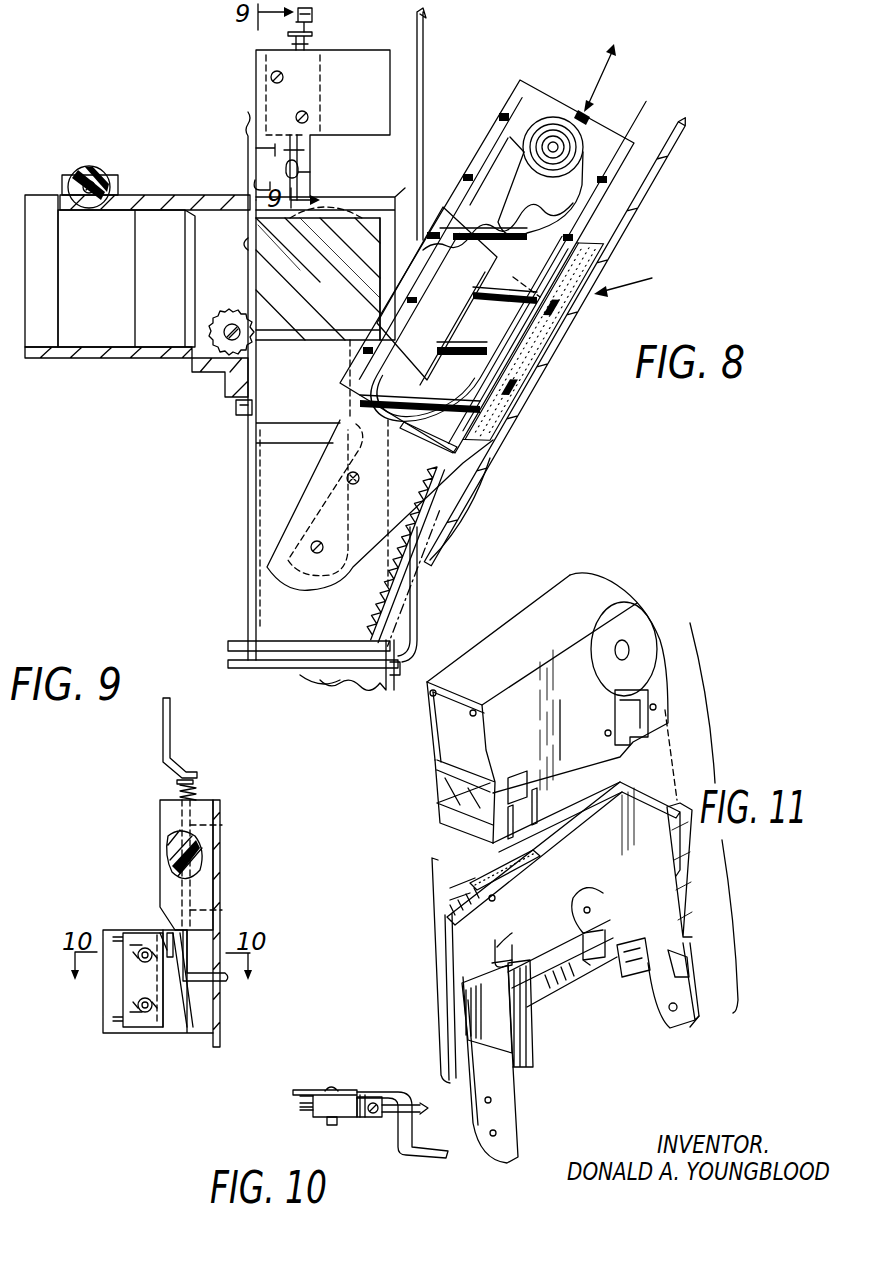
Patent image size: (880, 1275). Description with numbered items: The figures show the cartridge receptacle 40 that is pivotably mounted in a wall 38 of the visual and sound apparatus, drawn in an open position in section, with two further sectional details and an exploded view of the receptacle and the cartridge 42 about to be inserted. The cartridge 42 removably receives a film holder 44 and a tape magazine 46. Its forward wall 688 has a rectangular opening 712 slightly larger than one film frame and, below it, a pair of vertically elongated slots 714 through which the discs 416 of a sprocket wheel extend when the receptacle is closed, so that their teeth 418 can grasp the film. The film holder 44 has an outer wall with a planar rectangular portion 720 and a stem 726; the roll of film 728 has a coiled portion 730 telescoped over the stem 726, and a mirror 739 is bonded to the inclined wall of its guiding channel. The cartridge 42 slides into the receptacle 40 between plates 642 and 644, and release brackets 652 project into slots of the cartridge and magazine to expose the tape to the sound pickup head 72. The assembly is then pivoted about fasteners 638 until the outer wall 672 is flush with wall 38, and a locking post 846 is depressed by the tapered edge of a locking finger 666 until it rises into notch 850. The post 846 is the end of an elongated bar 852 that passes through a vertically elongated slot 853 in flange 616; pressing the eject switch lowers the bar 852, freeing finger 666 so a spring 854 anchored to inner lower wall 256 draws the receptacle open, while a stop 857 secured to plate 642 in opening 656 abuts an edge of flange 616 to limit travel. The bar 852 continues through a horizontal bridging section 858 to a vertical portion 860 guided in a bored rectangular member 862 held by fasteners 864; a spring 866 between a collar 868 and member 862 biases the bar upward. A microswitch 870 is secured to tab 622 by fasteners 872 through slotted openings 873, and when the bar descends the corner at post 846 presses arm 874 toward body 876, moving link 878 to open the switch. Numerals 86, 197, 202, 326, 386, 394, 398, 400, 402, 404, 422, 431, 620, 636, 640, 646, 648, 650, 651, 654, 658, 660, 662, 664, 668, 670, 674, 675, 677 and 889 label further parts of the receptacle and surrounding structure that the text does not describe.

In FIG. 8, the wall 38 is at (424, 30).
In FIG. 8, the cartridge receptacle 40 is at (640, 280).
In FIG. 8, the cartridge 42 is at (560, 92).
In FIG. 11, the cartridge 42 is at (532, 603).
In FIG. 11, the film holder 44 is at (446, 756).
In FIG. 11, the tape magazine 46 is at (644, 636).
In FIG. 11, the sound pickup head 72 is at (634, 975).
In FIG. 8, the frame base 86 is at (228, 670).
In FIG. 8, the bracket tab 197 is at (404, 664).
In FIG. 8, the drive housing block 202 is at (28, 272).
In FIG. 8, the inner lower wall 256 is at (290, 641).
In FIG. 8, the side plate 326 is at (250, 114).
In FIG. 8, the top rail 386 is at (122, 196).
In FIG. 8, the mounting bracket 394 is at (266, 150).
In FIG. 8, the roller 398 is at (93, 168).
In FIG. 8, the bottom rail 400 is at (85, 335).
In FIG. 8, the end block 402 is at (40, 194).
In FIG. 8, the roller support 404 is at (116, 186).
In FIG. 8, the discs 416 is at (232, 306).
In FIG. 8, the teeth 418 is at (264, 300).
In FIG. 8, the step bracket 422 is at (212, 354).
In FIG. 8, the clip 431 is at (256, 246).
In FIG. 8, the flange 616 is at (372, 104).
In FIG. 9, the flange 616 is at (215, 858).
In FIG. 8, the support plate 620 is at (392, 192).
In FIG. 9, the tab 622 is at (118, 1033).
In FIG. 10, the tab 622 is at (372, 1094).
In FIG. 8, the lower housing 636 is at (272, 478).
In FIG. 8, the fasteners 638 is at (310, 548).
In FIG. 11, the cassette tray 640 is at (608, 864).
In FIG. 11, the plate 642 is at (505, 1104).
In FIG. 11, the plate 644 is at (694, 1027).
In FIG. 11, the housing edge 646 is at (592, 815).
In FIG. 11, the cross bar 648 is at (548, 1003).
In FIG. 11, the guide rod 650 is at (540, 990).
In FIG. 11, the hole 651 is at (607, 897).
In FIG. 11, the release brackets 652 is at (602, 899).
In FIG. 11, the lower hole 654 is at (494, 1140).
In FIG. 11, the opening 656 is at (505, 1115).
In FIG. 11, the opening 658 is at (464, 990).
In FIG. 11, the vertical strip 660 is at (528, 1068).
In FIG. 11, the right side plate 662 is at (693, 930).
In FIG. 11, the clip 664 is at (512, 961).
In FIG. 11, the locking finger 666 is at (500, 942).
In FIG. 11, the hole 668 is at (673, 1013).
In FIG. 11, the tab 670 is at (690, 967).
In FIG. 8, the outer wall 672 is at (683, 136).
In FIG. 11, the outer wall 672 is at (446, 871).
In FIG. 8, the ramp 674 is at (520, 400).
In FIG. 11, the ramp 674 is at (466, 895).
In FIG. 8, the side rail 675 is at (592, 270).
In FIG. 11, the side rail 675 is at (470, 880).
In FIG. 8, the rail edge 677 is at (602, 250).
In FIG. 11, the forward wall 688 is at (590, 681).
In FIG. 11, the rectangular opening 712 is at (520, 778).
In FIG. 11, the vertically elongated slots 714 is at (512, 881).
In FIG. 11, the portion 720 is at (438, 742).
In FIG. 8, the stem 726 is at (613, 84).
In FIG. 8, the roll of film 728 is at (508, 138).
In FIG. 8, the coiled portion 730 is at (500, 180).
In FIG. 8, the mirror 739 is at (436, 341).
In FIG. 11, the mirror 739 is at (446, 797).
In FIG. 8, the locking post 846 is at (310, 172).
In FIG. 9, the locking post 846 is at (228, 980).
In FIG. 10, the locking post 846 is at (446, 1114).
In FIG. 11, the notch 850 is at (499, 918).
In FIG. 8, the elongated bar 852 is at (313, 34).
In FIG. 9, the elongated bar 852 is at (171, 712).
In FIG. 8, the vertically elongated slot 853 is at (257, 185).
In FIG. 9, the vertically elongated slot 853 is at (219, 1002).
In FIG. 8, the spring 854 is at (400, 608).
In FIG. 8, the stop 857 is at (350, 470).
In FIG. 8, the bridging section 858 is at (312, 16).
In FIG. 9, the vertical portion 860 is at (208, 806).
In FIG. 10, the vertical portion 860 is at (376, 1120).
In FIG. 9, the rectangular member 862 is at (196, 882).
In FIG. 9, the fasteners 864 is at (222, 828).
In FIG. 9, the spring 866 is at (196, 794).
In FIG. 9, the collar 868 is at (184, 772).
In FIG. 9, the microswitch 870 is at (118, 1012).
In FIG. 10, the microswitch 870 is at (313, 1106).
In FIG. 9, the fasteners 872 is at (140, 962).
In FIG. 10, the fasteners 872 is at (322, 1120).
In FIG. 9, the slotted openings 873 is at (158, 936).
In FIG. 9, the arm 874 is at (192, 1035).
In FIG. 10, the arm 874 is at (365, 1119).
In FIG. 9, the body 876 is at (155, 1033).
In FIG. 10, the body 876 is at (343, 1103).
In FIG. 9, the link 878 is at (166, 936).
In FIG. 8, the clip 889 is at (350, 703).